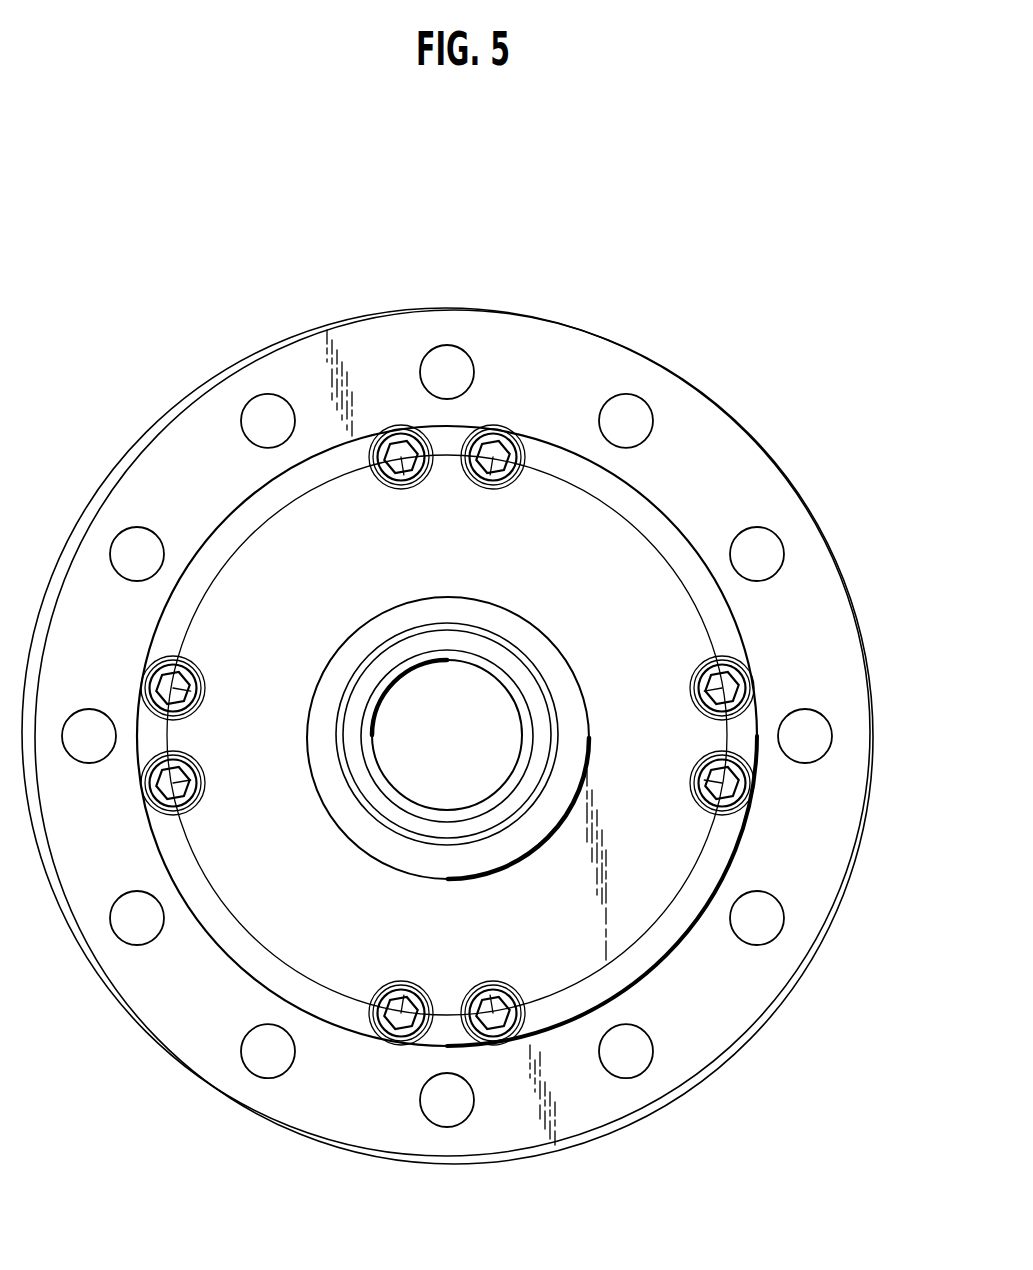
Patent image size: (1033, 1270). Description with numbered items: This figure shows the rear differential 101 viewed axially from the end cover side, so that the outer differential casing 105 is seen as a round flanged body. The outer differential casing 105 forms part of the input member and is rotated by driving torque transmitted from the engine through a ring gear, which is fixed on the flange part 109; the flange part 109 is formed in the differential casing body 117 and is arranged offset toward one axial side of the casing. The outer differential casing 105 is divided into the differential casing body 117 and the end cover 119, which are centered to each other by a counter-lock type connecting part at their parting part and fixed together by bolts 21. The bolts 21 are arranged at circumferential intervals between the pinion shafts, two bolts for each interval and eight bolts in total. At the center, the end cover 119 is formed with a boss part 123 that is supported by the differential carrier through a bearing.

The rear differential 101 is at (658, 211).
The outer differential casing 105 is at (784, 375).
The flange part 109 is at (752, 482).
The differential casing body 117 is at (447, 735).
The end cover 119 is at (594, 598).
The boss part 123 is at (388, 812).
The bolts 21 is at (477, 482).